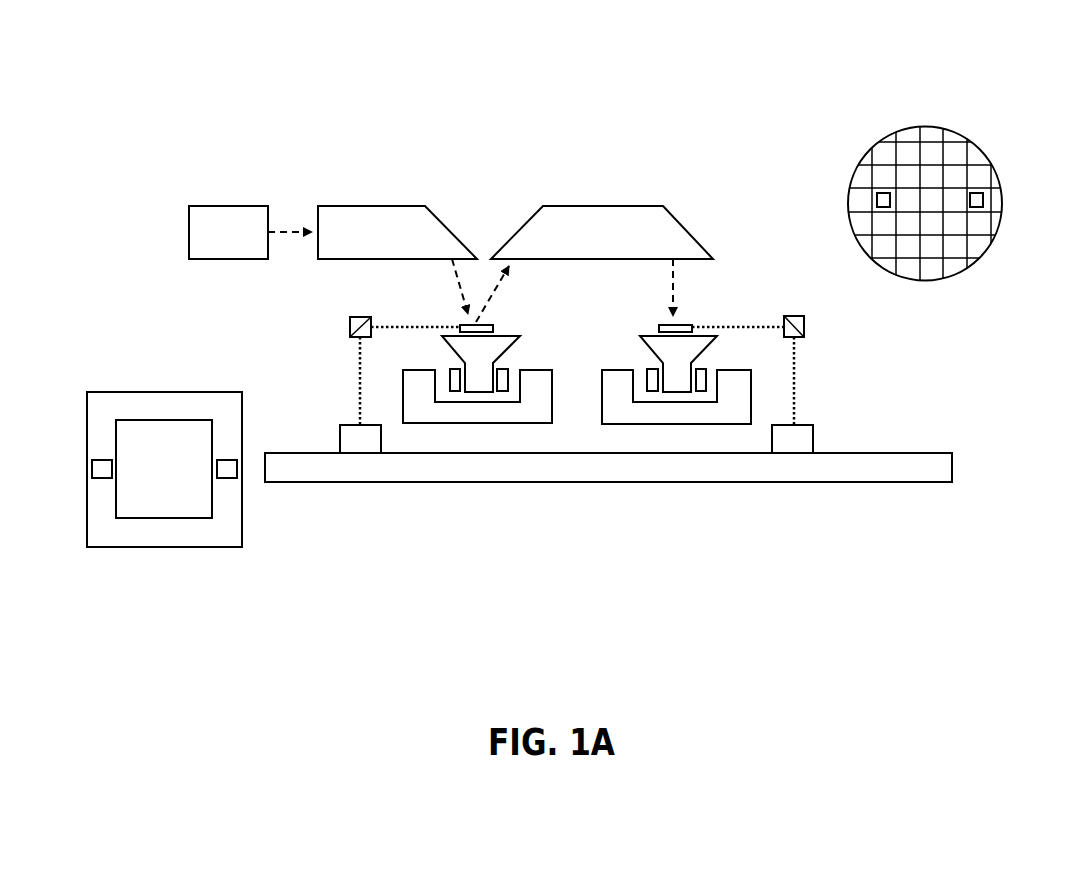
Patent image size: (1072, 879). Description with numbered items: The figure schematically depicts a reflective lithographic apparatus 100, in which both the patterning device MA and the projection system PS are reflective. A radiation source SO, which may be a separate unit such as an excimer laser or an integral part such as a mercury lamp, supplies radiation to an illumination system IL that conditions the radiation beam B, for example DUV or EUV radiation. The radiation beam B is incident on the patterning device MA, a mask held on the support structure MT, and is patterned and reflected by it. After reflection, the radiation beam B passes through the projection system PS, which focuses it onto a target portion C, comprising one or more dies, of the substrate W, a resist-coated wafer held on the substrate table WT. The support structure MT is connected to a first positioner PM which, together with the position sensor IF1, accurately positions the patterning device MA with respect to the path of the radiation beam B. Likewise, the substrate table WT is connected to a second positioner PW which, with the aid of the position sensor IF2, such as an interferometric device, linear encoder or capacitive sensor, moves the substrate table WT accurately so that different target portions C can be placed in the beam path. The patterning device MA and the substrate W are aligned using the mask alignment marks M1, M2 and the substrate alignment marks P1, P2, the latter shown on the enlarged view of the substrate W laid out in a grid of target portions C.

The lithographic apparatus 100 is at (860, 94).
The radiation source SO is at (228, 232).
The illumination system IL is at (397, 232).
The projection system PS is at (602, 232).
The radiation beam B is at (458, 291).
The position sensor IF1 is at (350, 317).
The position sensor IF2 is at (804, 327).
The patterning device MA is at (458, 322).
The mask alignment mark M1 is at (225, 478).
The mask alignment mark M2 is at (100, 478).
The support structure MT is at (473, 392).
The first positioner PM is at (513, 423).
The substrate table WT is at (672, 392).
The second positioner PW is at (708, 424).
The substrate W is at (842, 236).
The target portion C is at (932, 189).
The substrate alignment mark P1 is at (883, 207).
The substrate alignment mark P2 is at (977, 207).